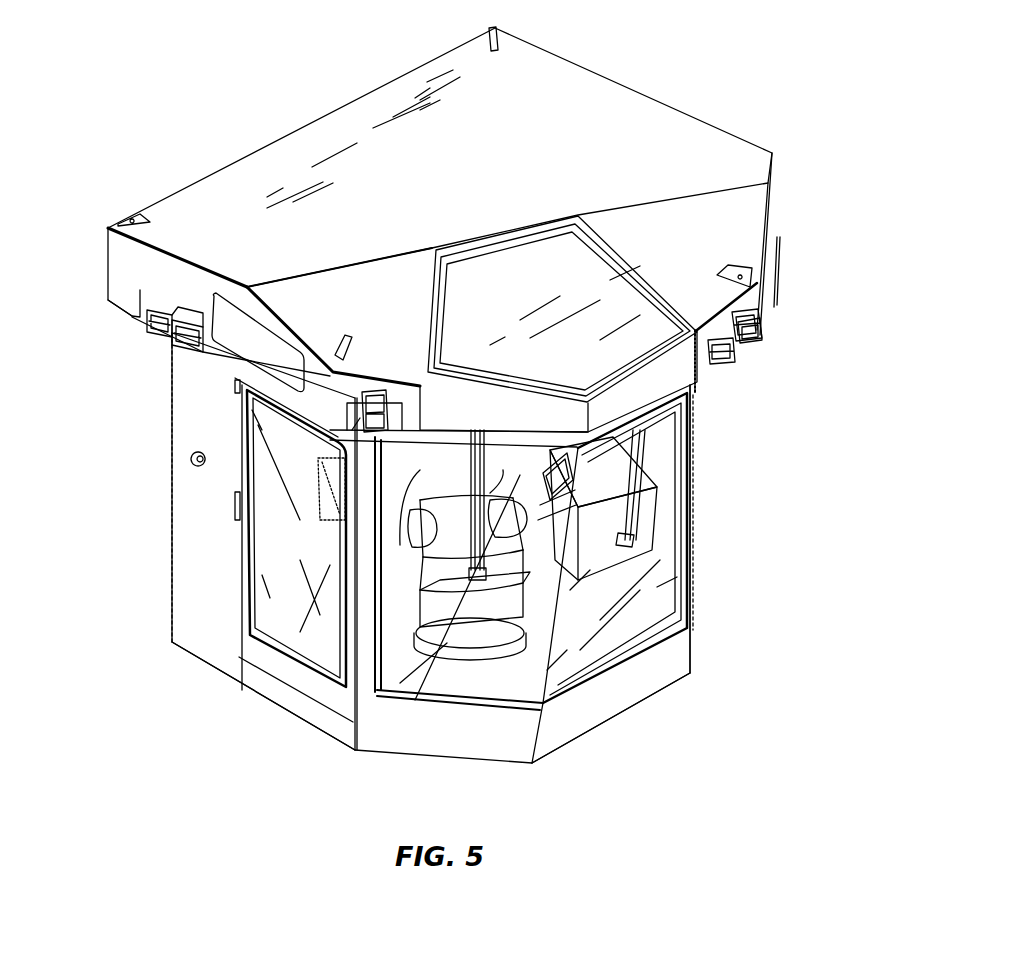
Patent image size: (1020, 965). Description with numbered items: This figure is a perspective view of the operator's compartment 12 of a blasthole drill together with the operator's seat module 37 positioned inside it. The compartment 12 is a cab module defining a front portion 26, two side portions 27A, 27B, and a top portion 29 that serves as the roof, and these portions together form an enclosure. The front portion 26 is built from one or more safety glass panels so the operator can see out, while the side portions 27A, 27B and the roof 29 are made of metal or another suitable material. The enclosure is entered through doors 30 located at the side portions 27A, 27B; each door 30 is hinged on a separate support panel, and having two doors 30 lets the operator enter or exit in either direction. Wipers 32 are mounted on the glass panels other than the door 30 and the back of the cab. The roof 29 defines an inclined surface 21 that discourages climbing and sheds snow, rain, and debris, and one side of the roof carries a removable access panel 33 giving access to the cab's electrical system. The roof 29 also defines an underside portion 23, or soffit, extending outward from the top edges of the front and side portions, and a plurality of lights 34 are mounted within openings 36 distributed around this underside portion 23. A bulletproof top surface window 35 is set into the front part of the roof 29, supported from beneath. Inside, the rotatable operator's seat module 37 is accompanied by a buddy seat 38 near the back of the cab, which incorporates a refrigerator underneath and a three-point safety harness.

The operator's compartment 12 is at (713, 70).
The inclined surface 21 is at (380, 303).
The underside portion 23 is at (125, 314).
The front portion 26 is at (587, 650).
The side portion 27A is at (203, 593).
The side portion 27B is at (688, 637).
The top portion 29 is at (390, 153).
The door 30 is at (300, 637).
The wiper 32 is at (480, 582).
The removable access panel 33 is at (208, 318).
The light 34 is at (370, 443).
The top surface window 35 is at (600, 293).
The opening 36 is at (150, 307).
The operator's seat module 37 is at (503, 607).
The buddy seat 38 is at (657, 477).